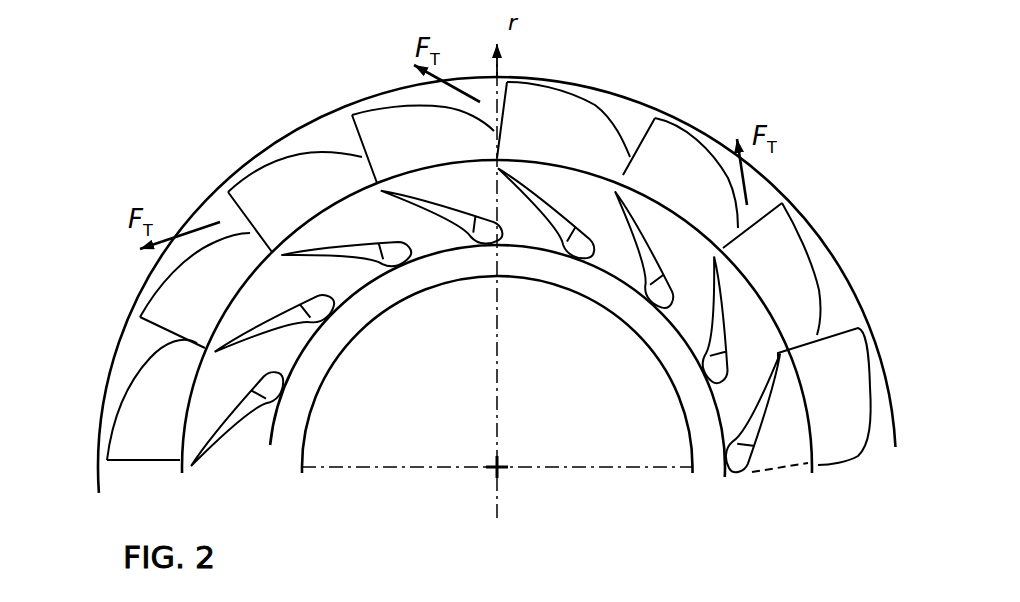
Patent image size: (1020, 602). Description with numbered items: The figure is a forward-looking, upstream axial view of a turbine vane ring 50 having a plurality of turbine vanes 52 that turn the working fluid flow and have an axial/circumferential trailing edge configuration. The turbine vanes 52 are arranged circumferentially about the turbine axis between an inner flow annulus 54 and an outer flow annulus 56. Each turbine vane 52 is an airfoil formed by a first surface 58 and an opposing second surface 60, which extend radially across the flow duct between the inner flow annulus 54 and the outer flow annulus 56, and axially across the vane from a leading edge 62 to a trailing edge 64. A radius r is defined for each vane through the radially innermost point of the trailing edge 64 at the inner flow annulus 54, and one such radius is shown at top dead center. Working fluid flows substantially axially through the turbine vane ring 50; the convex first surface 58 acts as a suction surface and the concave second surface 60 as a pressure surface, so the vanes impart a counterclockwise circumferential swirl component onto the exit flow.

The turbine vane ring 50 is at (89, 73).
The turbine vane 52 is at (265, 190).
The inner flow annulus 54 is at (698, 310).
The outer flow annulus 56 is at (822, 262).
The first surface 58 is at (562, 121).
The second surface 60 is at (539, 222).
The leading edge 62 is at (853, 477).
The trailing edge 64 is at (336, 134).